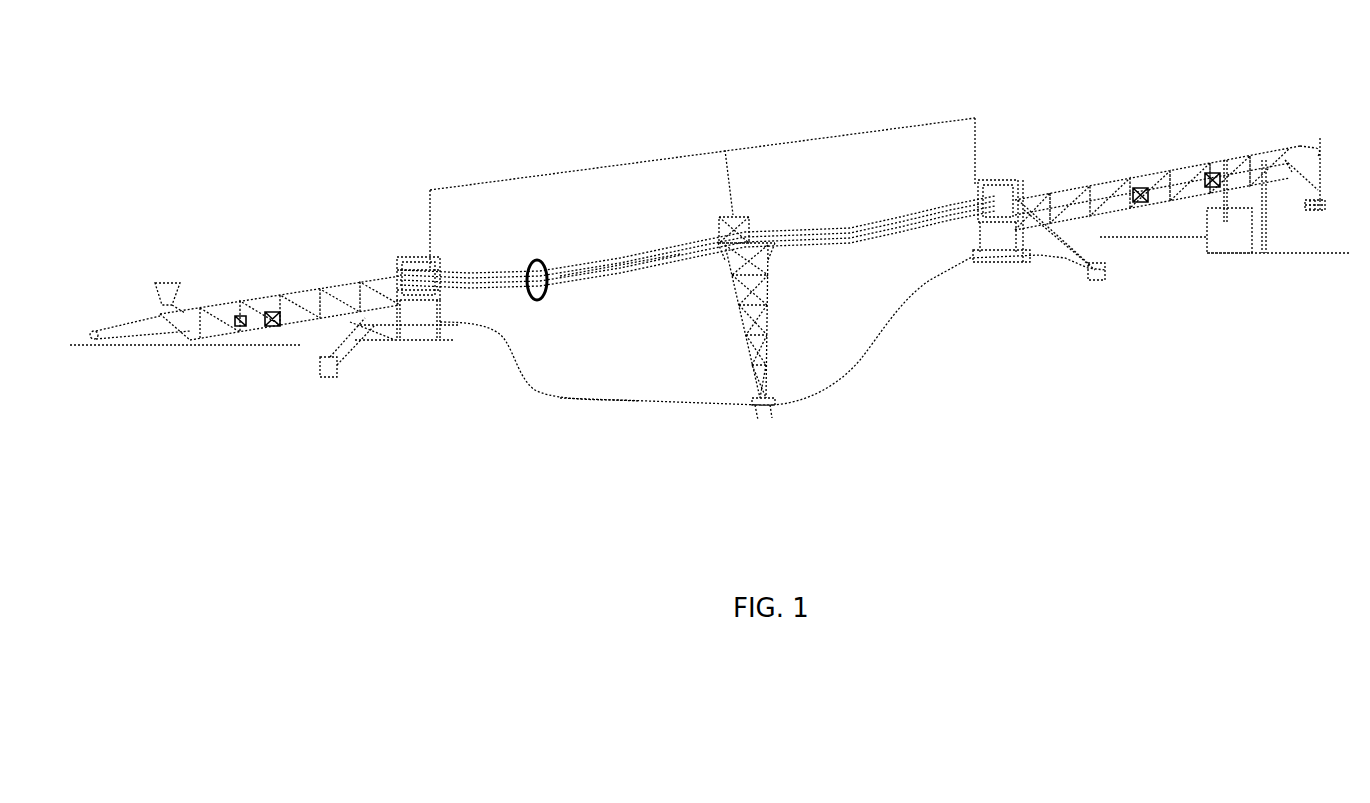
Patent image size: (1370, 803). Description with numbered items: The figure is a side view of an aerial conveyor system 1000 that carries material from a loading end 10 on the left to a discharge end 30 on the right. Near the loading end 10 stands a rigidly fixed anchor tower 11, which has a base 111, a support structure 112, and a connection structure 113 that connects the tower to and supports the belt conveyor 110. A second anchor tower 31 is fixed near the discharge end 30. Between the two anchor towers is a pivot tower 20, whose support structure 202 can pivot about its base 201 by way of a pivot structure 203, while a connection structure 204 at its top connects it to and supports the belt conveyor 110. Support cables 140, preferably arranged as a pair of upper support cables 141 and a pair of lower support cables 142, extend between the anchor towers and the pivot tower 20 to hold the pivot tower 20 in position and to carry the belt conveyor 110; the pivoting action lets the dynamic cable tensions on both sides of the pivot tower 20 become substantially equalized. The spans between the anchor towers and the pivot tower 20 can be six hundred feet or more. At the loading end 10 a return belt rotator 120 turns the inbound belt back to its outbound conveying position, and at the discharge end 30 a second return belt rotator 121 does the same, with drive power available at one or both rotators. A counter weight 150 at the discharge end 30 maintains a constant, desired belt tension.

The aerial conveyor system 1000 is at (200, 163).
The loading end 10 is at (152, 270).
The belt conveyor 110 is at (222, 305).
The return belt rotator 120 is at (275, 320).
The anchor tower 11 is at (418, 255).
The base 111 is at (418, 335).
The support structure 112 is at (438, 298).
The connection structure 113 is at (398, 278).
The support cables 140 is at (537, 300).
The upper support cables 141 is at (622, 272).
The lower support cables 142 is at (622, 282).
The pivot tower 20 is at (765, 322).
The base 201 is at (765, 405).
The support structure 202 is at (758, 282).
The pivot structure 203 is at (760, 396).
The connection structure 204 is at (748, 237).
The anchor tower 31 is at (992, 178).
The discharge end 30 is at (1297, 123).
The return belt rotator 121 is at (1140, 198).
The counter weight 150 is at (1230, 222).